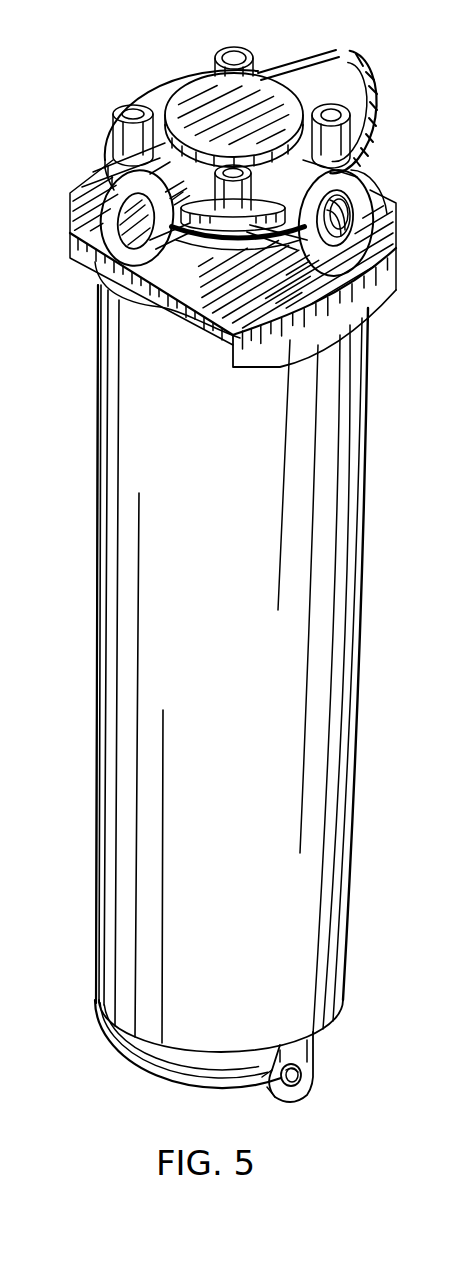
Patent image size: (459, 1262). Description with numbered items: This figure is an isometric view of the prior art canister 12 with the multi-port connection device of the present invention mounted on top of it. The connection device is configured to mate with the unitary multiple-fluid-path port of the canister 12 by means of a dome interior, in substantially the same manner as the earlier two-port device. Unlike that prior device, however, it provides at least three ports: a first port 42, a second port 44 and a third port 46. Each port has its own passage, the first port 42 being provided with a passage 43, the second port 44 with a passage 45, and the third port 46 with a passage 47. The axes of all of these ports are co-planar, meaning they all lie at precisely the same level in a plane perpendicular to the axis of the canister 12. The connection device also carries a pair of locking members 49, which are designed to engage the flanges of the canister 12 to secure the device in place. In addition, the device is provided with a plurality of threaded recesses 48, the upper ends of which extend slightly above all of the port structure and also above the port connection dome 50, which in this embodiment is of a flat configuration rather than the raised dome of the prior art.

The canister 12 is at (132, 558).
The first port 42 is at (103, 190).
The passage 43 is at (100, 229).
The second port 44 is at (371, 215).
The passage 45 is at (336, 226).
The third port 46 is at (325, 91).
The passage 47 is at (353, 70).
The threaded recesses 48 is at (224, 50).
The locking members 49 is at (333, 323).
The port connection dome 50 is at (194, 102).